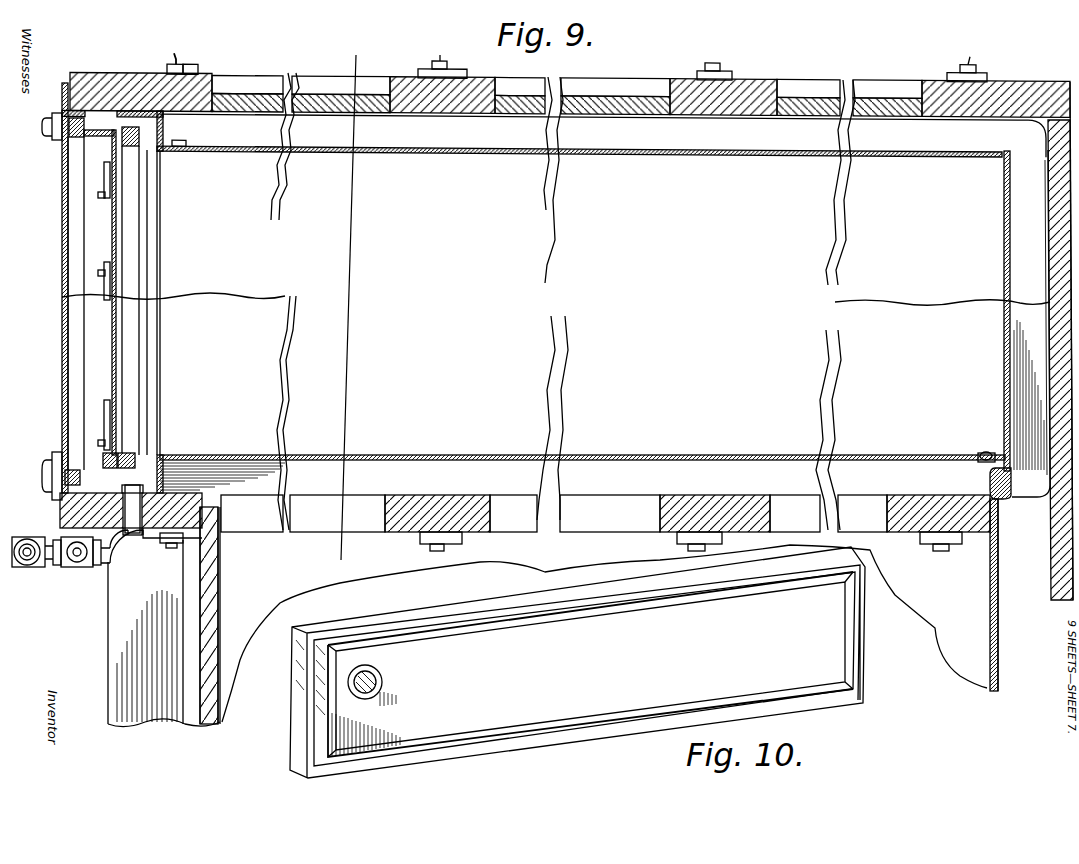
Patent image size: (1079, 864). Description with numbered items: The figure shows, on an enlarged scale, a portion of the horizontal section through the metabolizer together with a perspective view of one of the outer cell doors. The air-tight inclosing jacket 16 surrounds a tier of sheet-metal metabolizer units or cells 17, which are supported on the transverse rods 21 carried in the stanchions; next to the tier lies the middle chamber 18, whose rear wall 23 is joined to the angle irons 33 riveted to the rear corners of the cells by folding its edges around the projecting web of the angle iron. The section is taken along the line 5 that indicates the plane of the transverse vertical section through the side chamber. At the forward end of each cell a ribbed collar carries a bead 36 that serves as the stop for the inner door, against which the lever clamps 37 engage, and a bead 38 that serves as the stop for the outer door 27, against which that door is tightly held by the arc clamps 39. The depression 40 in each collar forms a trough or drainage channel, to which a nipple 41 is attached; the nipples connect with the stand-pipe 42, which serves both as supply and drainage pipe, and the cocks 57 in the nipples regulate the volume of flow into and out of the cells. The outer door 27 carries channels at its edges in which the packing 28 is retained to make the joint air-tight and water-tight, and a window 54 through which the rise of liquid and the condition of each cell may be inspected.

In FIG. 9, the section line 5 is at (345, 304).
In FIG. 9, the inclosing jacket 16 is at (868, 90).
In FIG. 9, the metabolizer units or cells 17 is at (722, 168).
In FIG. 9, the middle chamber 18 is at (536, 617).
In FIG. 9, the transverse rods 21 is at (936, 562).
In FIG. 9, the rear wall 23 is at (998, 602).
In FIG. 10, the outer door 27 is at (442, 640).
In FIG. 9, the packing 28 is at (75, 132).
In FIG. 9, the angle irons 33 is at (985, 464).
In FIG. 9, the bead 36 is at (105, 462).
In FIG. 9, the lever clamps 37 is at (98, 272).
In FIG. 9, the bead 38 is at (97, 140).
In FIG. 9, the arc clamps 39 is at (52, 125).
In FIG. 9, the depression 40 is at (145, 396).
In FIG. 9, the nipple 41 is at (135, 490).
In FIG. 9, the stand-pipe 42 is at (32, 565).
In FIG. 10, the window 54 is at (382, 678).
In FIG. 9, the cocks 57 is at (78, 568).